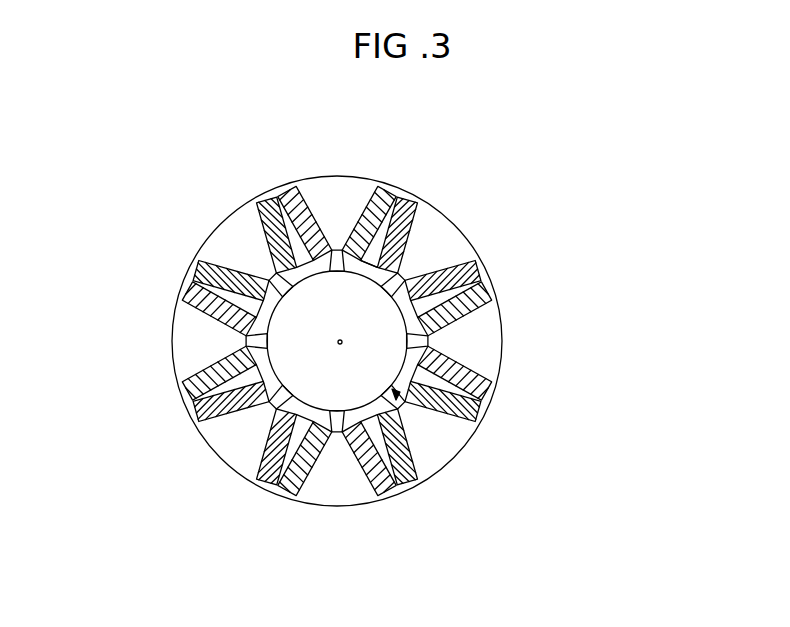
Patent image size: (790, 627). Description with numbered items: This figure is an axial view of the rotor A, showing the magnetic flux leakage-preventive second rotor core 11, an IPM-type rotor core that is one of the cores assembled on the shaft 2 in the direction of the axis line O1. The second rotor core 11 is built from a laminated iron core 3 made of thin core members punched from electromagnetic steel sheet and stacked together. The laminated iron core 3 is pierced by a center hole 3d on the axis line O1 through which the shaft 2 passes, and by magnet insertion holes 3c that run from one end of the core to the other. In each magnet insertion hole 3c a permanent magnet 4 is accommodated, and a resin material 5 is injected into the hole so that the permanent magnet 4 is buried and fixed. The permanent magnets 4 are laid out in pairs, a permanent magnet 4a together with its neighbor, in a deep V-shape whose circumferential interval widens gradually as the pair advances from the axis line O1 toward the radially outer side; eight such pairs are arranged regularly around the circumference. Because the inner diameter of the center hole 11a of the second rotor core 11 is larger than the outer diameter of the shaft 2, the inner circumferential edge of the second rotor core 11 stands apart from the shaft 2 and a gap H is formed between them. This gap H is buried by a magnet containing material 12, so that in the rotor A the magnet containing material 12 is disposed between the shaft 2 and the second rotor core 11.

The shaft 2 is at (342, 395).
The laminated iron core 3 is at (467, 236).
The magnet insertion hole 3c is at (291, 293).
The center hole 3d is at (396, 394).
The permanent magnet 4 is at (291, 293).
The permanent magnet 4a is at (291, 293).
The resin material 5 is at (299, 186).
The second rotor core 11 is at (567, 199).
The center hole 11a is at (481, 452).
The magnet containing material 12 is at (262, 418).
The rotor A is at (537, 149).
The gap H is at (392, 256).
The axis line O1 is at (342, 343).